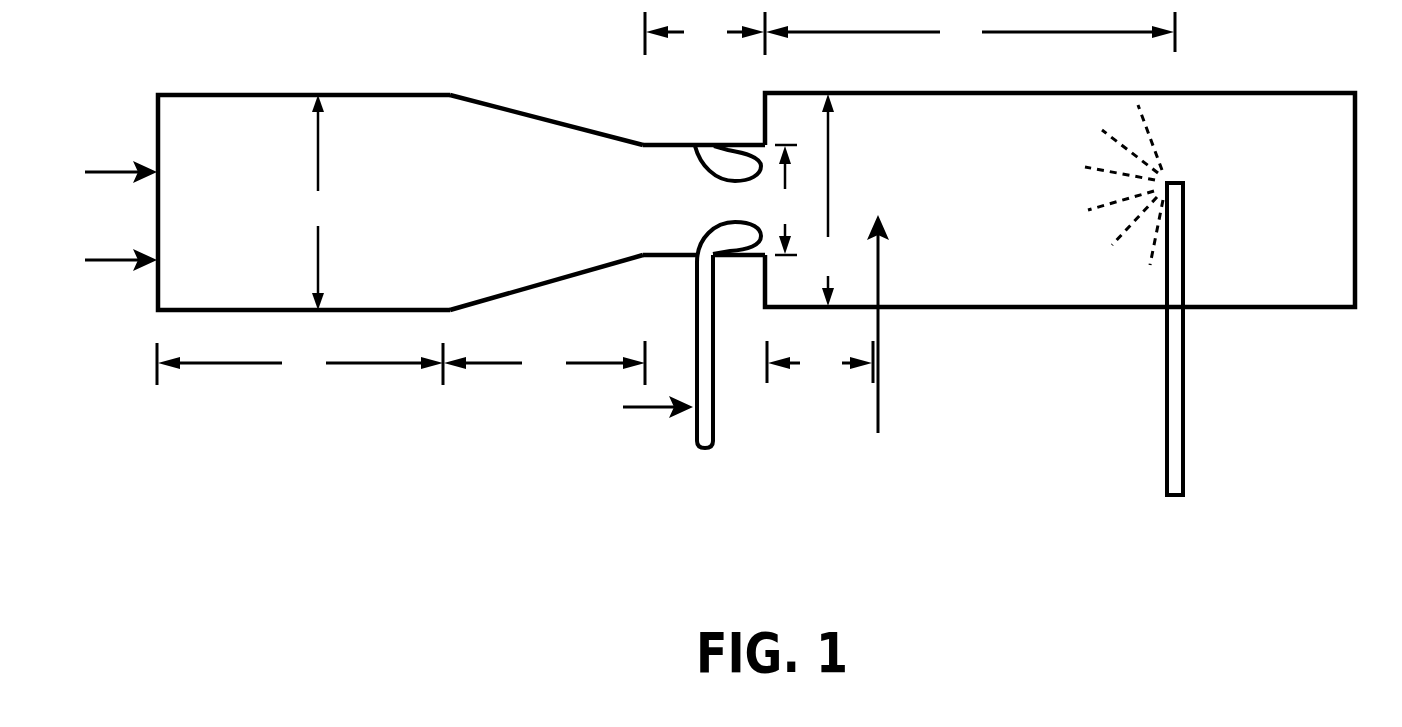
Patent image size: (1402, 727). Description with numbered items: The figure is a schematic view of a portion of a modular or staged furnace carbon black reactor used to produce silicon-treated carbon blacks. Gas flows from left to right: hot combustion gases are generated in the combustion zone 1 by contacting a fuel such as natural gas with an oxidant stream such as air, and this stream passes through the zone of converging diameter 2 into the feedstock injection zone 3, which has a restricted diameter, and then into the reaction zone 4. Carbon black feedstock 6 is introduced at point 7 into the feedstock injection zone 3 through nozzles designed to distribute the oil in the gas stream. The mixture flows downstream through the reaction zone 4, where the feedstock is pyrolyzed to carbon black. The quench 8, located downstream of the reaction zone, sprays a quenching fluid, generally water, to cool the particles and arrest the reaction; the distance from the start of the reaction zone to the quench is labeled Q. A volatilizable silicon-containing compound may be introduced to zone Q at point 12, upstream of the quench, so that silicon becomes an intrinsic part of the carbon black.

The combustion zone 1 is at (262, 214).
The zone of converging diameter 2 is at (520, 214).
The feedstock injection zone 3 is at (693, 221).
The reaction zone 4 is at (948, 204).
The carbon black feedstock 6 is at (705, 480).
The feedstock injection point 7 is at (684, 268).
The quench 8 is at (1184, 163).
The volatilizable compound introduction point 12 is at (878, 341).